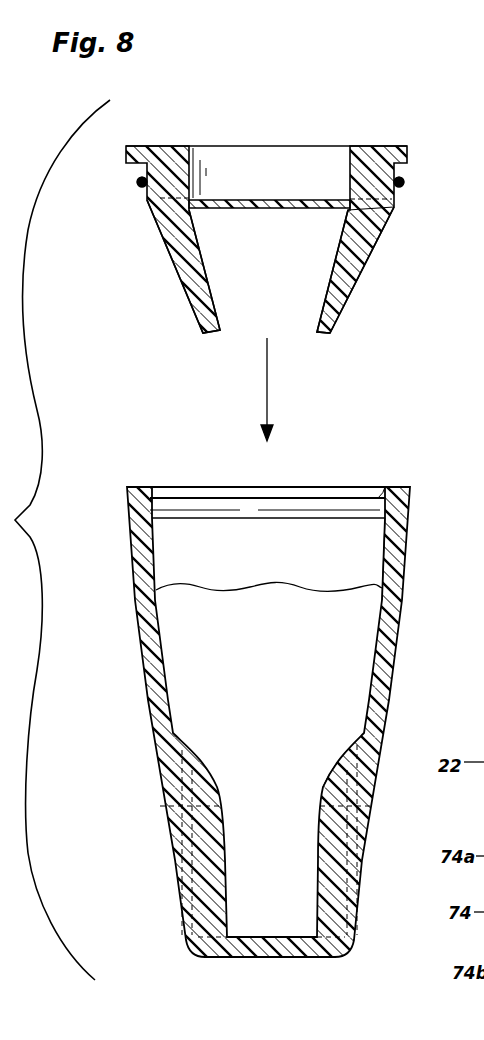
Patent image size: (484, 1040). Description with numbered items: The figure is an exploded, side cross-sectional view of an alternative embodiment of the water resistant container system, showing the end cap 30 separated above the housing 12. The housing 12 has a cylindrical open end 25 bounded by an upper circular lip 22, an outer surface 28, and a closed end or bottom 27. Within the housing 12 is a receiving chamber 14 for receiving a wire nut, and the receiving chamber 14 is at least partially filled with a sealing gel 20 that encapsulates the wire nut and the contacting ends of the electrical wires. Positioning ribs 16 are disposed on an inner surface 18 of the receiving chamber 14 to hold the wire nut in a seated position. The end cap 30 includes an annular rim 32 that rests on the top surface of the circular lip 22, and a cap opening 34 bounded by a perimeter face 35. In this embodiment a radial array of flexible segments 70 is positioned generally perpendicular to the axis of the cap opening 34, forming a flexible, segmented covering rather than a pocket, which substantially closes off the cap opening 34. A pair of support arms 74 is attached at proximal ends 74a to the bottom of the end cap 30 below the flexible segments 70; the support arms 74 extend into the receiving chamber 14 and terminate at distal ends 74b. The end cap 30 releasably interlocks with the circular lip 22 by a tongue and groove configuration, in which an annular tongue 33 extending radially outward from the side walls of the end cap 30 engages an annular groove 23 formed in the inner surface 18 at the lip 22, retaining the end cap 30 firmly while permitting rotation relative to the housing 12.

The housing 12 is at (385, 660).
The receiving chamber 14 is at (320, 725).
The positioning ribs 16 is at (343, 745).
The inner surface 18 is at (385, 612).
The sealing gel 20 is at (190, 582).
The circular lip 22 is at (415, 493).
The annular groove 23 is at (148, 503).
The open end 25 is at (380, 488).
The closed end or bottom 27 is at (293, 958).
The outer surface 28 is at (377, 795).
The end cap 30 is at (268, 235).
The annular rim 32 is at (407, 156).
The annular tongue 33 is at (139, 185).
The cap opening 34 is at (223, 160).
The perimeter face 35 is at (350, 187).
The flexible segments 70 is at (250, 147).
The support arms 74 is at (182, 290).
The proximal ends 74a is at (386, 213).
The distal ends 74b is at (325, 334).